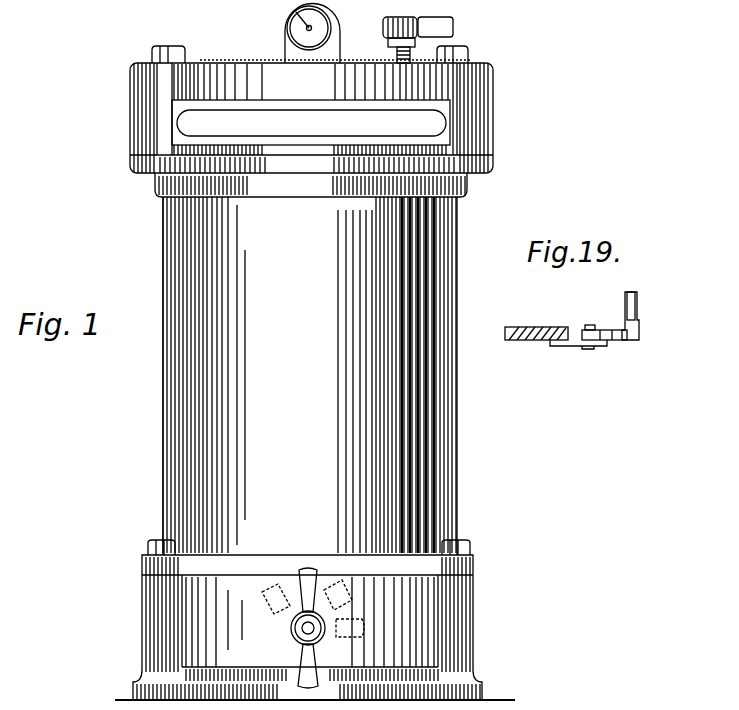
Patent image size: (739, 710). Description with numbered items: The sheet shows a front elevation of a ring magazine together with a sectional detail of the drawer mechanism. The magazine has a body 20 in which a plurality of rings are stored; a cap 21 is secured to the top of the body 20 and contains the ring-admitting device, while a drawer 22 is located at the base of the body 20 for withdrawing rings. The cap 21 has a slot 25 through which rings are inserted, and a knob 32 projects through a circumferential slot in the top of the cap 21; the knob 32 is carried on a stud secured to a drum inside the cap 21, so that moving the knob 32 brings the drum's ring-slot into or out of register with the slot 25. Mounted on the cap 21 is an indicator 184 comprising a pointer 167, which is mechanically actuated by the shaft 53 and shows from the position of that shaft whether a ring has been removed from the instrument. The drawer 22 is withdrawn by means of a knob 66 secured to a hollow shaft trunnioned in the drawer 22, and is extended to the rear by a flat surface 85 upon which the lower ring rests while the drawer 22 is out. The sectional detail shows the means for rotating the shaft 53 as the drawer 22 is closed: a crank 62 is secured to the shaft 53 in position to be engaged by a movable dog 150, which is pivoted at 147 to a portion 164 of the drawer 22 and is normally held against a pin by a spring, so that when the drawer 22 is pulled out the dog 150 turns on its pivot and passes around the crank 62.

In FIG. 1, the body 20 is at (310, 376).
In FIG. 1, the cap 21 is at (493, 105).
In FIG. 1, the drawer 22 is at (307, 620).
In FIG. 1, the slot 25 is at (311, 122).
In FIG. 1, the knob 32 is at (455, 27).
In FIG. 1, the knob 66 is at (303, 585).
In FIG. 1, the pointer 167 is at (298, 34).
In FIG. 1, the indicator 184 is at (284, 29).
In FIG. 19, the flat surface 85 is at (525, 328).
In FIG. 19, the pivot 147 is at (589, 326).
In FIG. 19, the movable dog 150 is at (608, 330).
In FIG. 19, the shaft 53 is at (634, 304).
In FIG. 19, the portion of the drawer 164 is at (568, 345).
In FIG. 19, the crank 62 is at (625, 340).